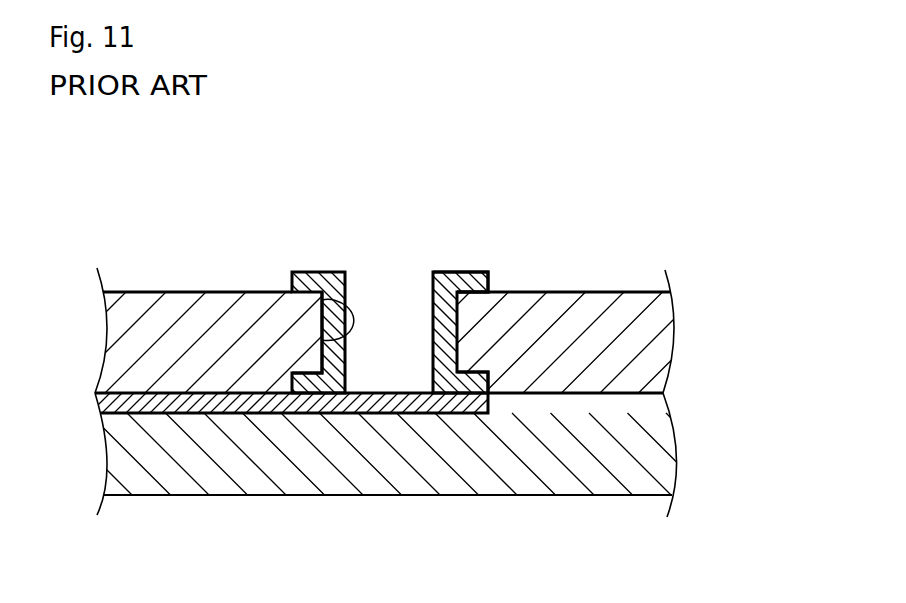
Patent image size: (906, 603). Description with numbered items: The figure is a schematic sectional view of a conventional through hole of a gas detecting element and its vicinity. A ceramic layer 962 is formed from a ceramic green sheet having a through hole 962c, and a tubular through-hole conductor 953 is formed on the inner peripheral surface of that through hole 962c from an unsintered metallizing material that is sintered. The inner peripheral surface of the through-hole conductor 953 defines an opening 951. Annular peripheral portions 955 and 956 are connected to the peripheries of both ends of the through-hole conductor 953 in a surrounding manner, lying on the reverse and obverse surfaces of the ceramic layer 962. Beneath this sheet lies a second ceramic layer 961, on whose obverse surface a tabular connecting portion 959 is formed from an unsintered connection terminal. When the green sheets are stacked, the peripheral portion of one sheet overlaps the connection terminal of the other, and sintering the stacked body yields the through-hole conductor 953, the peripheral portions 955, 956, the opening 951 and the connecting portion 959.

The opening 951 is at (352, 297).
The through-hole conductor 953 is at (445, 345).
The peripheral portion 955 is at (478, 360).
The peripheral portion 956 is at (463, 276).
The connecting portion 959 is at (362, 405).
The ceramic layer 961 is at (637, 430).
The ceramic layer 962 is at (637, 355).
The through hole 962c is at (320, 295).